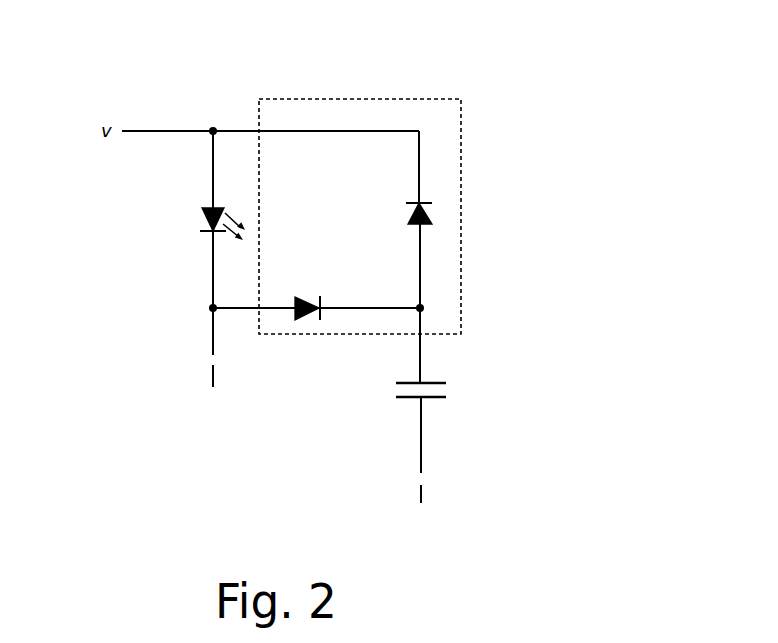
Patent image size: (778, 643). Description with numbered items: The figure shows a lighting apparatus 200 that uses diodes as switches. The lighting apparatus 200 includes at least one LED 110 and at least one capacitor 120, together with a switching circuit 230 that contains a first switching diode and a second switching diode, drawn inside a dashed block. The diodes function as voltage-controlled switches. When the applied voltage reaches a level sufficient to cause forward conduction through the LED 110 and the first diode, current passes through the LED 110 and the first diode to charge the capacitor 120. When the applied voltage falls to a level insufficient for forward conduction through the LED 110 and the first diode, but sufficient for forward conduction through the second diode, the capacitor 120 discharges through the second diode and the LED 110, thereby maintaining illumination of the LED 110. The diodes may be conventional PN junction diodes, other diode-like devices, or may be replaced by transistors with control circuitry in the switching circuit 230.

The lighting apparatus 200 is at (560, 89).
The LED 110 is at (165, 241).
The switching circuit 230 is at (358, 99).
The capacitor 120 is at (455, 432).